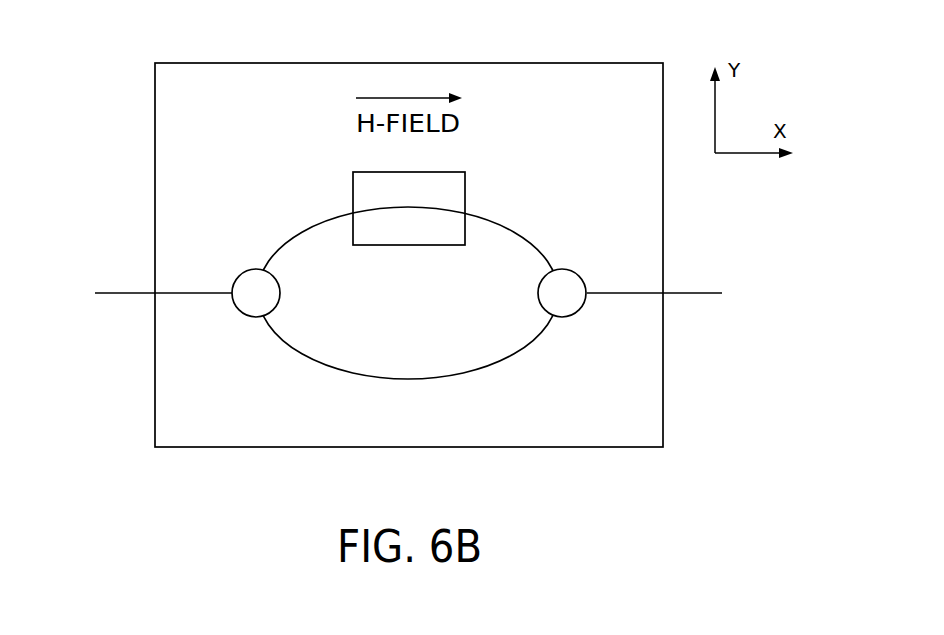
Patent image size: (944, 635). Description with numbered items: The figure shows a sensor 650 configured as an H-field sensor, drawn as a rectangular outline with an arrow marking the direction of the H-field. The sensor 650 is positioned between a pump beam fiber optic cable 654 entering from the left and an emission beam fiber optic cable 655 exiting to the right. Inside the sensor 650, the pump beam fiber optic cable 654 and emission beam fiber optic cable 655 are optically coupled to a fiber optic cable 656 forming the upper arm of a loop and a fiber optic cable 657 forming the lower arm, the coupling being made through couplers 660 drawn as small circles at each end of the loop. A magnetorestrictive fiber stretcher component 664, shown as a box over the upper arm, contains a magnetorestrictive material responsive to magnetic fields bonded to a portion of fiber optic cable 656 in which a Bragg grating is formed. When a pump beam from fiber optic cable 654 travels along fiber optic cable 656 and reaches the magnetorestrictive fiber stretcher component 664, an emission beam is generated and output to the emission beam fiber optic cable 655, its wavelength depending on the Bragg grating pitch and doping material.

The sensor 650 is at (593, 63).
The pump beam fiber optic cable 654 is at (110, 292).
The emission beam fiber optic cable 655 is at (700, 292).
The fiber optic cable 656 is at (278, 250).
The fiber optic cable 657 is at (457, 374).
The coupler 660 is at (260, 317).
The magnetorestrictive fiber stretcher component 664 is at (352, 182).